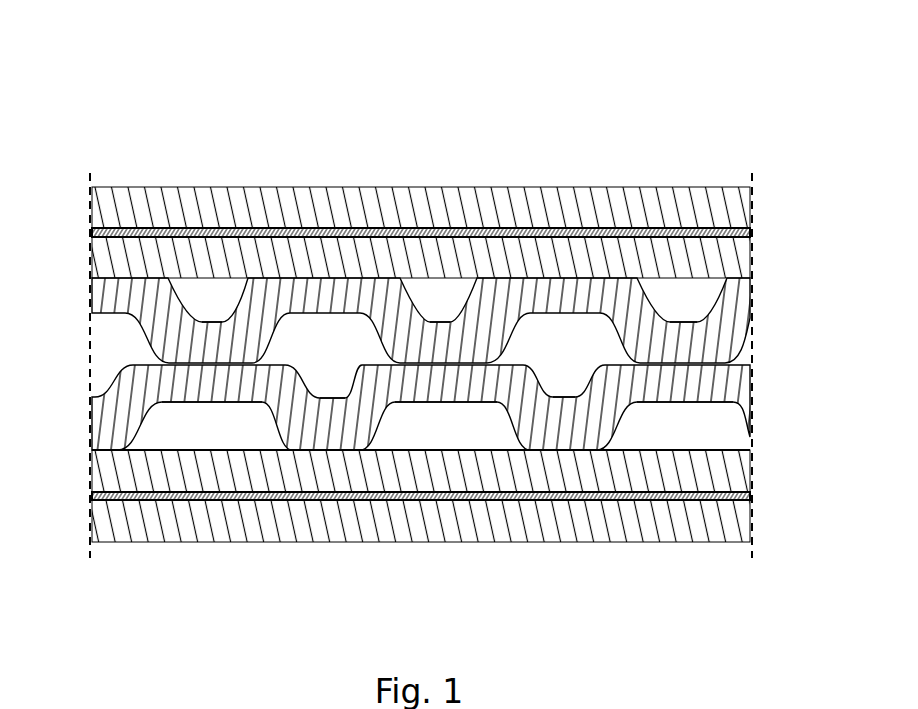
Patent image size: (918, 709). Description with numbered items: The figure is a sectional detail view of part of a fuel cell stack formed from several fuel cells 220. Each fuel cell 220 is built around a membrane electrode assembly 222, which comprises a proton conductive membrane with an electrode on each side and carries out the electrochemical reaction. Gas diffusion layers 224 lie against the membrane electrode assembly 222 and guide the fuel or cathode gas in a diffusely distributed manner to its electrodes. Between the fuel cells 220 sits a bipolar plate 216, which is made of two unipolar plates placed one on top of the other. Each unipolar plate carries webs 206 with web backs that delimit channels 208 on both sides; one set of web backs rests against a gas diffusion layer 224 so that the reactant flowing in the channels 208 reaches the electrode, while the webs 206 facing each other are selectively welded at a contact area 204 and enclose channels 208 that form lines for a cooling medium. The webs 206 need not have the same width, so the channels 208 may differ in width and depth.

The contact area 204 is at (463, 350).
The webs 206 is at (383, 360).
The channels 208 is at (211, 321).
The bipolar plate 216 is at (456, 331).
The fuel cell 220 is at (435, 368).
The membrane electrode assembly 222 is at (105, 230).
The gas diffusion layer 224 is at (737, 202).